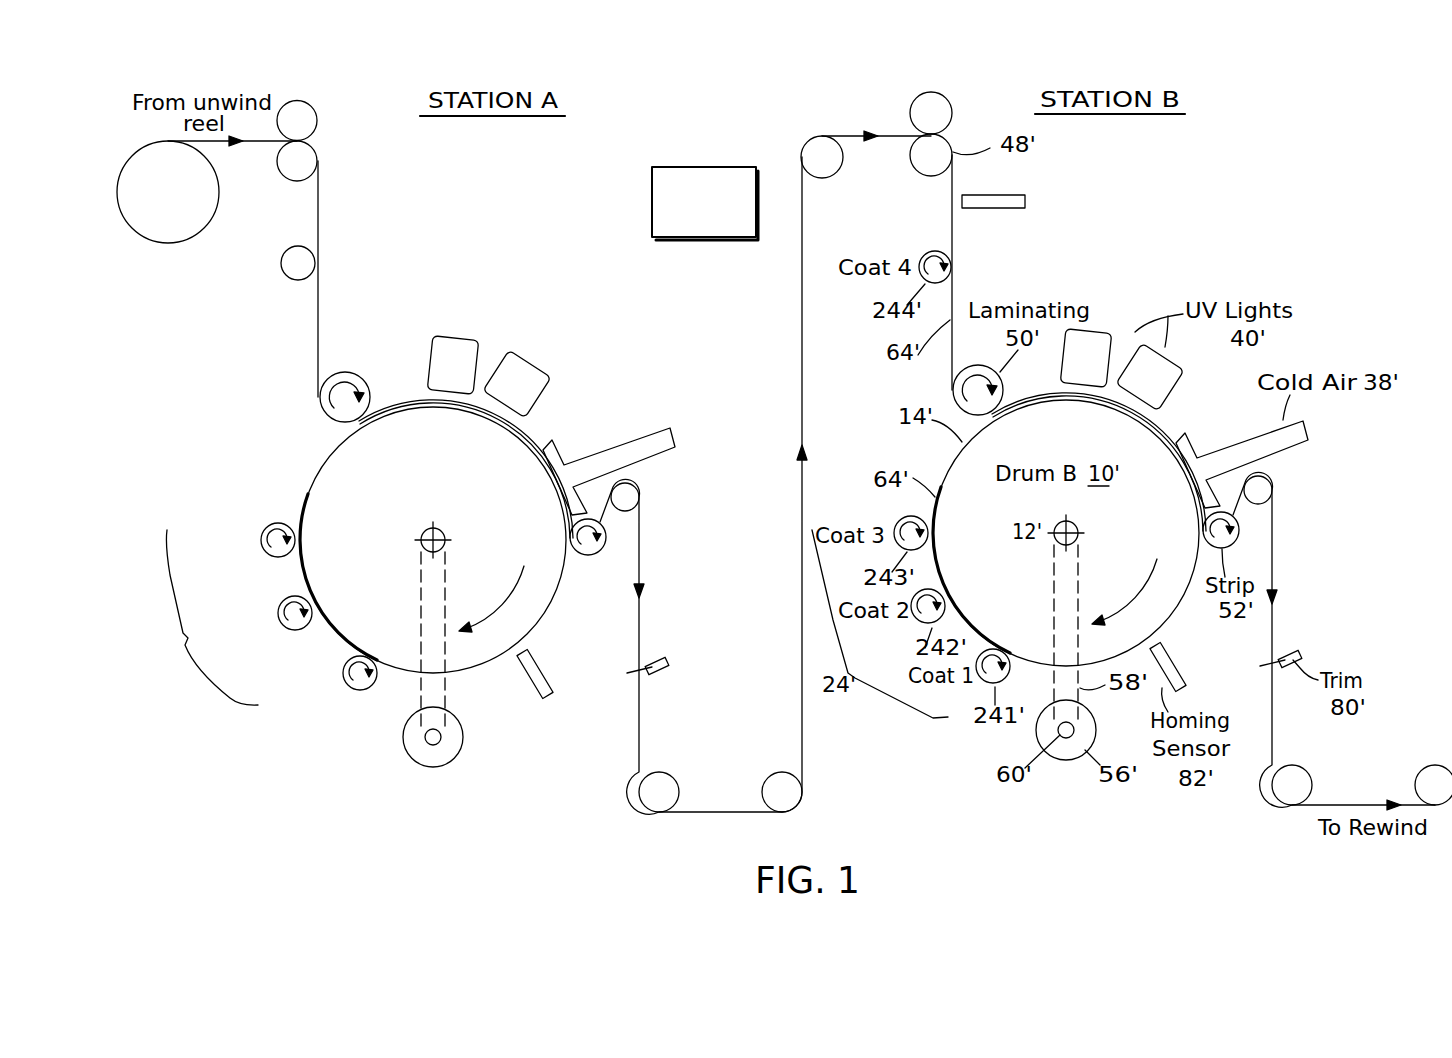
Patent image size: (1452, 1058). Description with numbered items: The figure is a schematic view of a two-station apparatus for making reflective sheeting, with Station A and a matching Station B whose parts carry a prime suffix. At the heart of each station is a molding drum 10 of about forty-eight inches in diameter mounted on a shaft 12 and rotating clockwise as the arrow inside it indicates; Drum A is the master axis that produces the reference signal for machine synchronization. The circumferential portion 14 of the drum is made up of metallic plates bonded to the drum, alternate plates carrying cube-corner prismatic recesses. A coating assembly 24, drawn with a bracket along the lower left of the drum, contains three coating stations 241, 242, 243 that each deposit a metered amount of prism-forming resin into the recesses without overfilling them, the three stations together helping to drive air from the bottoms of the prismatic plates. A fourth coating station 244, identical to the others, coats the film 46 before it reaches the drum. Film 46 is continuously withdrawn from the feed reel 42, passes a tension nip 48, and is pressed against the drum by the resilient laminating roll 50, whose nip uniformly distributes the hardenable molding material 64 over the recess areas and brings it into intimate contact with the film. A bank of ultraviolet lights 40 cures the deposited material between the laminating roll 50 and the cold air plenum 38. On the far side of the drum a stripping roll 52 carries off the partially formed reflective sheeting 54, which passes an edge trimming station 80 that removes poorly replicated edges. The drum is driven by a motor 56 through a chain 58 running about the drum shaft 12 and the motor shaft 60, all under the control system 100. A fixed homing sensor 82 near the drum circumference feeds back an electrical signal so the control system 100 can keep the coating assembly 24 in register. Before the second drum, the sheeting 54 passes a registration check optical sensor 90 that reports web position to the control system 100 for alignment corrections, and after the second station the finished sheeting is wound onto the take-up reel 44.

The molding drum 10 is at (489, 494).
The shaft 12 is at (419, 531).
The circumferential portion 14 is at (328, 447).
The coating assembly 24 is at (204, 617).
The cold air plenum 38 is at (648, 428).
The bank of ultraviolet lights 40 is at (468, 337).
The film feed reel 42 is at (185, 197).
The take-up reel 44 is at (1411, 774).
The film 46 is at (319, 218).
The tension nip 48 is at (318, 152).
The laminating roll 50 is at (356, 374).
The stripping roll 52 is at (592, 556).
The partially formed reflective sheeting 54 is at (640, 545).
The motor 56 is at (438, 768).
The chain 58 is at (455, 690).
The motor shaft 60 is at (428, 742).
The hardenable molding material 64 is at (316, 297).
The edge trimming station 80 is at (662, 668).
The homing sensor 82 is at (532, 690).
The registration check optical sensor 90 is at (1015, 193).
The control system 100 is at (650, 205).
The first coating station 241 is at (366, 690).
The second coating station 242 is at (308, 630).
The third coating station 243 is at (270, 558).
The fourth coating station 244 is at (288, 279).